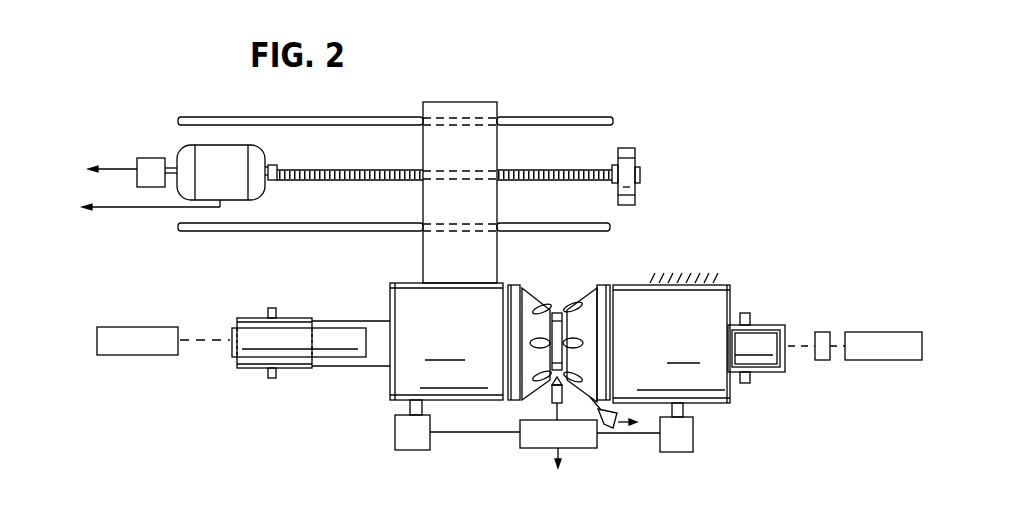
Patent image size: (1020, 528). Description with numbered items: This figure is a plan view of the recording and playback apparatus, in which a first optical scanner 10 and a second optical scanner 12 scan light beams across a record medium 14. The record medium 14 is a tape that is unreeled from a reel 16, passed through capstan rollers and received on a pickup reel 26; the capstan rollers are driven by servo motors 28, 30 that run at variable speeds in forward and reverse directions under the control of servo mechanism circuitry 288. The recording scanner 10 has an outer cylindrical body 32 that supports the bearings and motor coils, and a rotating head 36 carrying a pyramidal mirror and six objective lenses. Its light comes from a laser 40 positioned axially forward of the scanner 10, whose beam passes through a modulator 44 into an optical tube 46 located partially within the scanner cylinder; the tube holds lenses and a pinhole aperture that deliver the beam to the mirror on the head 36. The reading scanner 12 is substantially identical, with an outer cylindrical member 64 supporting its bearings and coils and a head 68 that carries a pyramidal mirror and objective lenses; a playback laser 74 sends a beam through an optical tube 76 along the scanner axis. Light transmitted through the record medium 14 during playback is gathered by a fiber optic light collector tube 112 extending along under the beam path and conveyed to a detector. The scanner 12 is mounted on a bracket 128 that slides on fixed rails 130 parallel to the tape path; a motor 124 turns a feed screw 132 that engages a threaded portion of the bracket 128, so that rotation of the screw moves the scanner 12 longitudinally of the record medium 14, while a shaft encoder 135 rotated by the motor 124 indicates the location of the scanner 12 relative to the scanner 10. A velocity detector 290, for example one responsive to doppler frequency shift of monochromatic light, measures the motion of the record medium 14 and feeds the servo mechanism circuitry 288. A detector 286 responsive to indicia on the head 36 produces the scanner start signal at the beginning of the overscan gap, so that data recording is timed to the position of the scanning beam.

The first optical scanner 10 is at (650, 254).
The second optical scanner 12 is at (376, 290).
The record medium 14 is at (357, 366).
The reel 16 is at (784, 318).
The pickup reel 26 is at (247, 319).
The servo motor 28 is at (710, 422).
The servo motor 30 is at (395, 435).
The outer cylindrical body 32 is at (680, 296).
The head 36 is at (582, 297).
The laser 40 is at (874, 332).
The modulator 44 is at (822, 332).
The optical tube 46 is at (760, 330).
The outer cylindrical member 64 is at (408, 293).
The head 68 is at (531, 283).
The playback laser 74 is at (113, 325).
The optical tube 76 is at (331, 327).
The fiber optic light collector tube 112 is at (557, 313).
The motor 124 is at (262, 152).
The bracket 128 is at (465, 102).
The fixed rails 130 is at (537, 117).
The feed screw 132 is at (345, 170).
The shaft encoder 135 is at (136, 158).
The detector 286 is at (608, 432).
The servo mechanism circuitry 288 is at (525, 448).
The velocity detector 290 is at (550, 403).